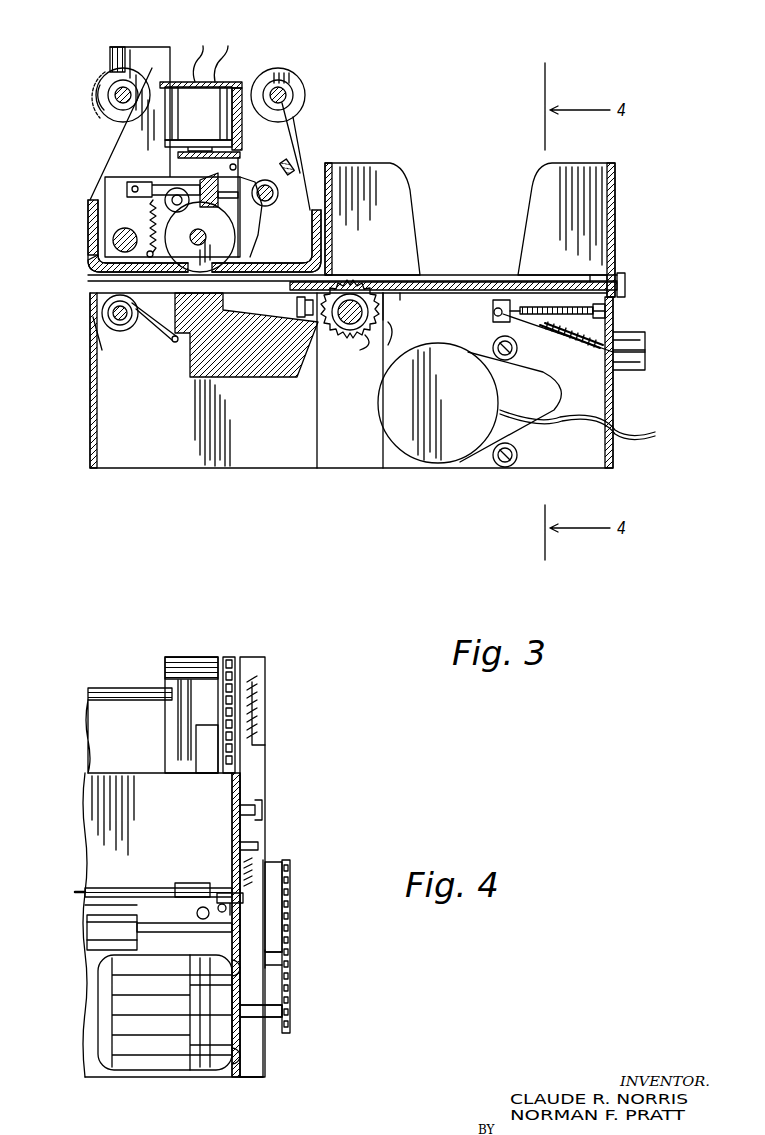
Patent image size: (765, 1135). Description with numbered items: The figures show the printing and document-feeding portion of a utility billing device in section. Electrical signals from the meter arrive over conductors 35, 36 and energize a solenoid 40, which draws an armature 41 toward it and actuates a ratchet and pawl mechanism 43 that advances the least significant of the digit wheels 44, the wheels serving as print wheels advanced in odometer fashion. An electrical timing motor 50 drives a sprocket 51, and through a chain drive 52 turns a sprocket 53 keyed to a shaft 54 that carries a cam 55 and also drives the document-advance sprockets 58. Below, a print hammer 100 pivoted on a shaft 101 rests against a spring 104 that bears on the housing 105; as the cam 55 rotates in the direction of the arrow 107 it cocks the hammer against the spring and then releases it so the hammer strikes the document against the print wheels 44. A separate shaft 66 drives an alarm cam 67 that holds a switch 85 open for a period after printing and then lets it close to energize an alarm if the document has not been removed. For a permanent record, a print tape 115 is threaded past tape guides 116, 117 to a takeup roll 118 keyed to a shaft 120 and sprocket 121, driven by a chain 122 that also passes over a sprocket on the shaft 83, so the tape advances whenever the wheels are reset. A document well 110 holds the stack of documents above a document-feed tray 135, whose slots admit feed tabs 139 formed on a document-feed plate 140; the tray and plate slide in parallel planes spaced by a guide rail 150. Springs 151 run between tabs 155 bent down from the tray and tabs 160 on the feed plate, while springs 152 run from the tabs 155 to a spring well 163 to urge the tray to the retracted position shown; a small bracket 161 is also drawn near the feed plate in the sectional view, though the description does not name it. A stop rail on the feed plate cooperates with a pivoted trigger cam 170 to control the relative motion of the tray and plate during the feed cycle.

In FIG. 3, the conductor 35 is at (199, 54).
In FIG. 3, the conductor 36 is at (230, 54).
In FIG. 3, the solenoid 40 is at (212, 121).
In FIG. 3, the armature 41 is at (200, 158).
In FIG. 3, the ratchet and pawl mechanism 43 is at (240, 215).
In FIG. 3, the digit wheels 44 is at (222, 243).
In FIG. 3, the electrical timing motor 50 is at (448, 462).
In FIG. 4, the electrical timing motor 50 is at (165, 1068).
In FIG. 4, the sprocket 51 is at (291, 1014).
In FIG. 4, the chain drive 52 is at (291, 964).
In FIG. 4, the sprocket 53 is at (291, 880).
In FIG. 3, the shaft 54 is at (372, 308).
In FIG. 4, the shaft 54 is at (185, 932).
In FIG. 3, the cam 55 is at (358, 340).
In FIG. 4, the cam 55 is at (80, 936).
In FIG. 3, the document-advance sprockets 58 is at (362, 350).
In FIG. 3, the shaft 66 is at (275, 200).
In FIG. 3, the alarm cam 67 is at (264, 185).
In FIG. 3, the shaft 83 is at (200, 235).
In FIG. 3, the switch 85 is at (280, 160).
In FIG. 3, the print hammer 100 is at (230, 377).
In FIG. 3, the shaft 101 is at (116, 332).
In FIG. 3, the spring 104 is at (174, 344).
In FIG. 3, the housing 105 is at (90, 385).
In FIG. 4, the housing 105 is at (238, 1080).
In FIG. 3, the arrow 107 is at (392, 322).
In FIG. 3, the document well 110 is at (386, 243).
In FIG. 4, the document well 110 is at (232, 805).
In FIG. 3, the print tape 115 is at (293, 95).
In FIG. 4, the print tape 115 is at (142, 678).
In FIG. 3, the tape guide 116 is at (303, 255).
In FIG. 3, the tape guide 117 is at (90, 240).
In FIG. 3, the takeup roll 118 is at (103, 107).
In FIG. 3, the shaft 120 is at (128, 90).
In FIG. 4, the sprocket 121 is at (229, 657).
In FIG. 3, the chain 122 is at (101, 68).
In FIG. 3, the document-feed tray 135 is at (455, 280).
In FIG. 4, the document-feed tray 135 is at (122, 888).
In FIG. 3, the feed tabs 139 is at (598, 284).
In FIG. 4, the feed tabs 139 is at (190, 883).
In FIG. 3, the document-feed plate 140 is at (450, 298).
In FIG. 4, the document-feed plate 140 is at (111, 900).
In FIG. 3, the guide rail 150 is at (627, 282).
In FIG. 4, the guide rail 150 is at (78, 890).
In FIG. 3, the springs 151 is at (546, 303).
In FIG. 3, the springs 152 is at (598, 350).
In FIG. 4, the springs 152 is at (197, 913).
In FIG. 3, the tabs 155 is at (494, 312).
In FIG. 3, the tabs 160 is at (584, 338).
In FIG. 4, the bracket 161 is at (222, 880).
In FIG. 3, the spring well 163 is at (643, 365).
In FIG. 3, the trigger cam 170 is at (296, 306).